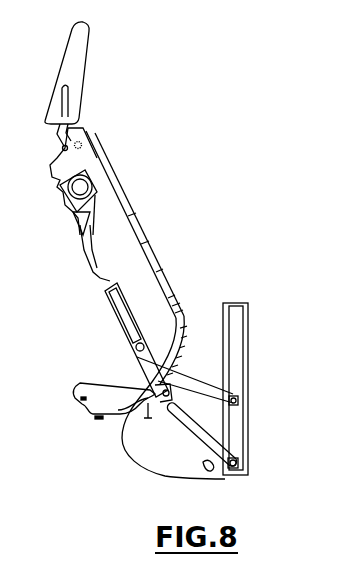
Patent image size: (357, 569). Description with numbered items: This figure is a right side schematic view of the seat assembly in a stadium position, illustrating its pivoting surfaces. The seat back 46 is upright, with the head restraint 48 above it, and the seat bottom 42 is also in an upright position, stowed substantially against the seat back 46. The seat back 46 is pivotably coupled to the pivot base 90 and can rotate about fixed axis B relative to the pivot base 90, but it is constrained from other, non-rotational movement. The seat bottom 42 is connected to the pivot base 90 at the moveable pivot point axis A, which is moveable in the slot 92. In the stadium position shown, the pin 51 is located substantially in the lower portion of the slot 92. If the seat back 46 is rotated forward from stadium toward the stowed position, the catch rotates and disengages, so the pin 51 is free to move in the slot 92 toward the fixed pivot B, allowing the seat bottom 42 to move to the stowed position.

The head restraint 48 is at (92, 62).
The seat back 46 is at (128, 198).
The fixed axis B is at (137, 373).
The pivot base 90 is at (140, 427).
The slot 92 is at (173, 427).
The seat bottom 42 is at (248, 333).
The moveable pivot point axis A is at (245, 453).
The pin 51 is at (242, 457).